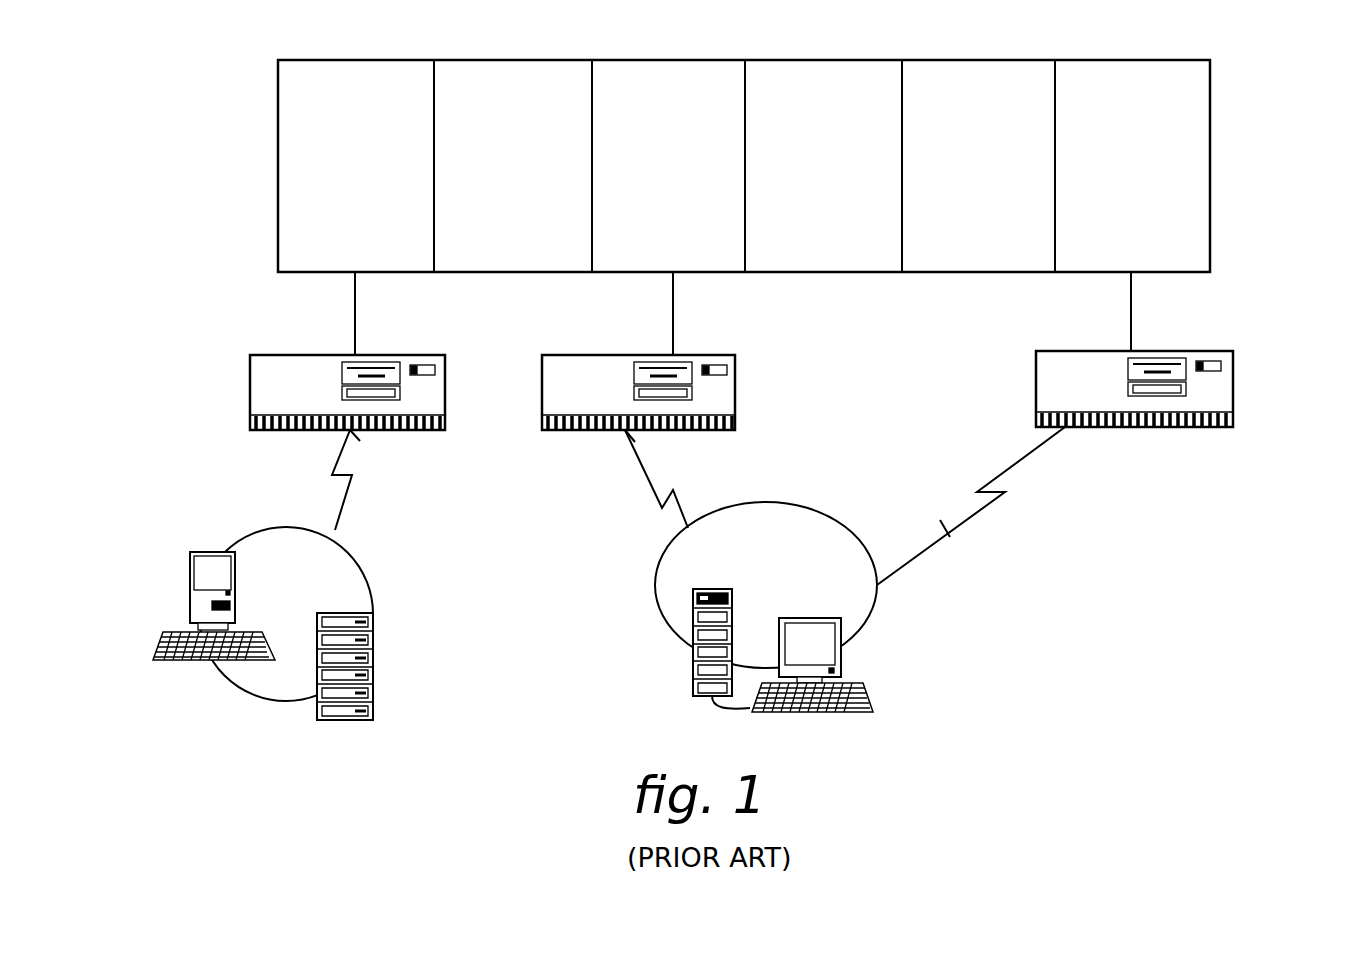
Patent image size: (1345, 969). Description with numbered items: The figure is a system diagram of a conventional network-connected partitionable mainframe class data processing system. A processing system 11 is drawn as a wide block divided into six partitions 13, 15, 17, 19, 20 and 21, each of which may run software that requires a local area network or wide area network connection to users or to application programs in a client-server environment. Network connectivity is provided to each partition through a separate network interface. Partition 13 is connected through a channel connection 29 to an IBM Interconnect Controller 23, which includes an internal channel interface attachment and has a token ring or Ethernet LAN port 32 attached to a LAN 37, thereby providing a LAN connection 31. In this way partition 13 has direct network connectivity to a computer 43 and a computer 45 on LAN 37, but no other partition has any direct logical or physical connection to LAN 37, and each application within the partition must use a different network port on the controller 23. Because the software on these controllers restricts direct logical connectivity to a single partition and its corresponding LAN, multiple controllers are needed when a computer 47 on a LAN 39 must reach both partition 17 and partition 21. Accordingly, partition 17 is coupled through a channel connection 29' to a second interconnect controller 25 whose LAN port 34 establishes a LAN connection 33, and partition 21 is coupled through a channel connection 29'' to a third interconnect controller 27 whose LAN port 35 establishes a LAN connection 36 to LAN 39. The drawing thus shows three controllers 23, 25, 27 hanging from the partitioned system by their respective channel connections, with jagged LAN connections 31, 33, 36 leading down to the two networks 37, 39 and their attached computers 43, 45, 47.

The processing system 11 is at (1210, 150).
The partition 13 is at (372, 174).
The partition 15 is at (521, 174).
The partition 17 is at (668, 174).
The partition 19 is at (838, 172).
The partition 20 is at (990, 172).
The partition 21 is at (1140, 172).
The IBM 3172 Interconnect Controller 23 is at (250, 388).
The IBM 3172 Interconnect Controller 25 is at (735, 382).
The IBM 3172 Interconnect Controller 27 is at (1233, 390).
The channel connection 29 is at (260, 313).
The channel connection 29' is at (754, 313).
The channel connection 29'' is at (1185, 311).
The LAN connection 31 is at (337, 528).
The LAN port 32 is at (353, 433).
The LAN connection 33 is at (645, 485).
The LAN port 34 is at (630, 437).
The LAN port 35 is at (1073, 432).
The LAN connection 36 is at (948, 537).
The LAN 37 is at (367, 587).
The LAN 39 is at (840, 520).
The computer 43 is at (190, 560).
The computer 45 is at (373, 690).
The computer 47 is at (841, 668).